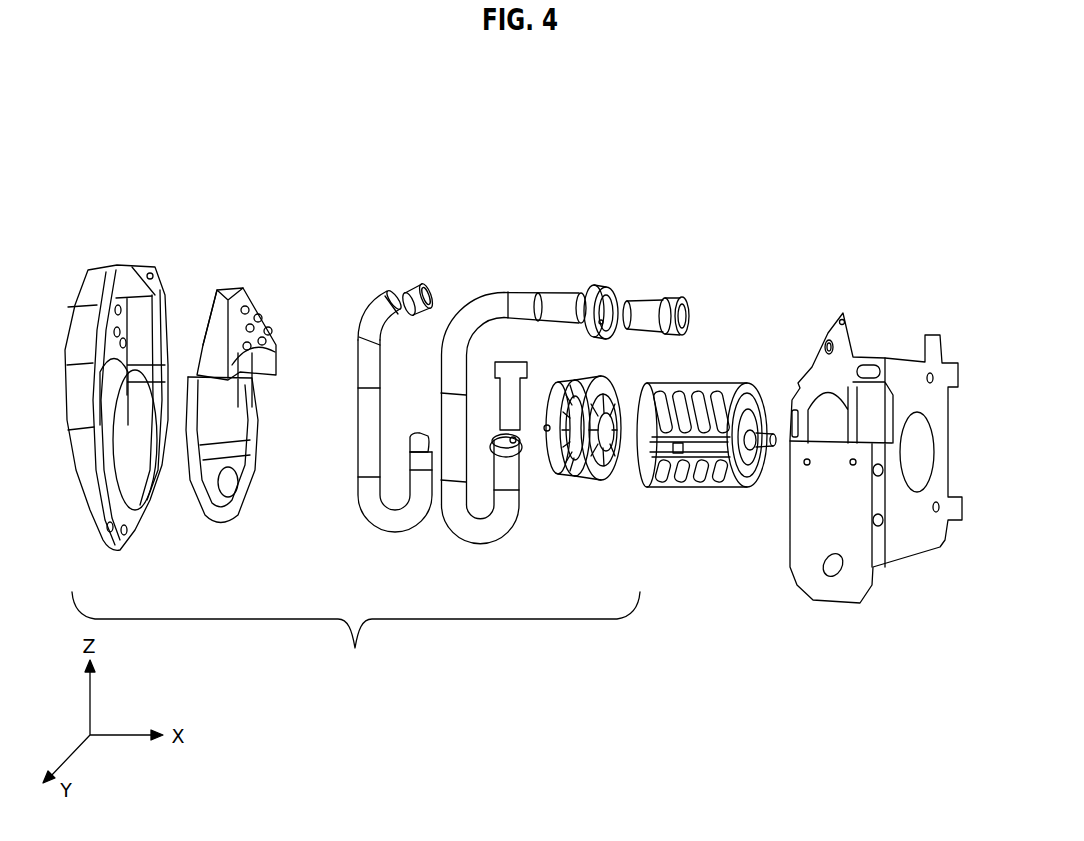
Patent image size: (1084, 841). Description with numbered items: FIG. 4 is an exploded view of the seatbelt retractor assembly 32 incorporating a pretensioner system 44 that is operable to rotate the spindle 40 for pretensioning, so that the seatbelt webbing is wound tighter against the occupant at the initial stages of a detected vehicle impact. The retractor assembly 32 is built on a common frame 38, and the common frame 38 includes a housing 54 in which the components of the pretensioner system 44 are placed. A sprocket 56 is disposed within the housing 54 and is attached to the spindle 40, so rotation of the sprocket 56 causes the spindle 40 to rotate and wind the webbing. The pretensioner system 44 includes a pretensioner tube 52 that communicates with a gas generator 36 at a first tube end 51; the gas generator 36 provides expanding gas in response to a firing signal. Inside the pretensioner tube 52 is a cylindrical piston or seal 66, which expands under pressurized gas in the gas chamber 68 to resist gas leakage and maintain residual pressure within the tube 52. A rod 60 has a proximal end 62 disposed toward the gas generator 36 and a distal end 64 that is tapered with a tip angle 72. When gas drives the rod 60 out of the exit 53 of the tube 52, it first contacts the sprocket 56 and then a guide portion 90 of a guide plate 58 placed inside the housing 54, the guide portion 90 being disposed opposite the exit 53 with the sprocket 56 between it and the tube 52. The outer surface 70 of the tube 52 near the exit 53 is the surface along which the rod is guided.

The retractor assembly 32 is at (571, 140).
The gas generator 36 is at (645, 308).
The common frame 38 is at (900, 375).
The spindle 40 is at (707, 400).
The pretensioner system 44 is at (356, 651).
The first tube end 51 is at (542, 292).
The pretensioner tube 52 is at (513, 424).
The exit 53 is at (505, 453).
The housing 54 is at (102, 285).
The sprocket 56 is at (607, 463).
The guide plate 58 is at (240, 498).
The rod 60 is at (379, 393).
The proximal end 62 is at (394, 308).
The distal end 64 is at (423, 460).
The seal 66 is at (415, 292).
The gas chamber 68 is at (600, 307).
The outer surface 70 is at (515, 503).
The tip angle 72 is at (417, 434).
The guide portion 90 is at (260, 330).